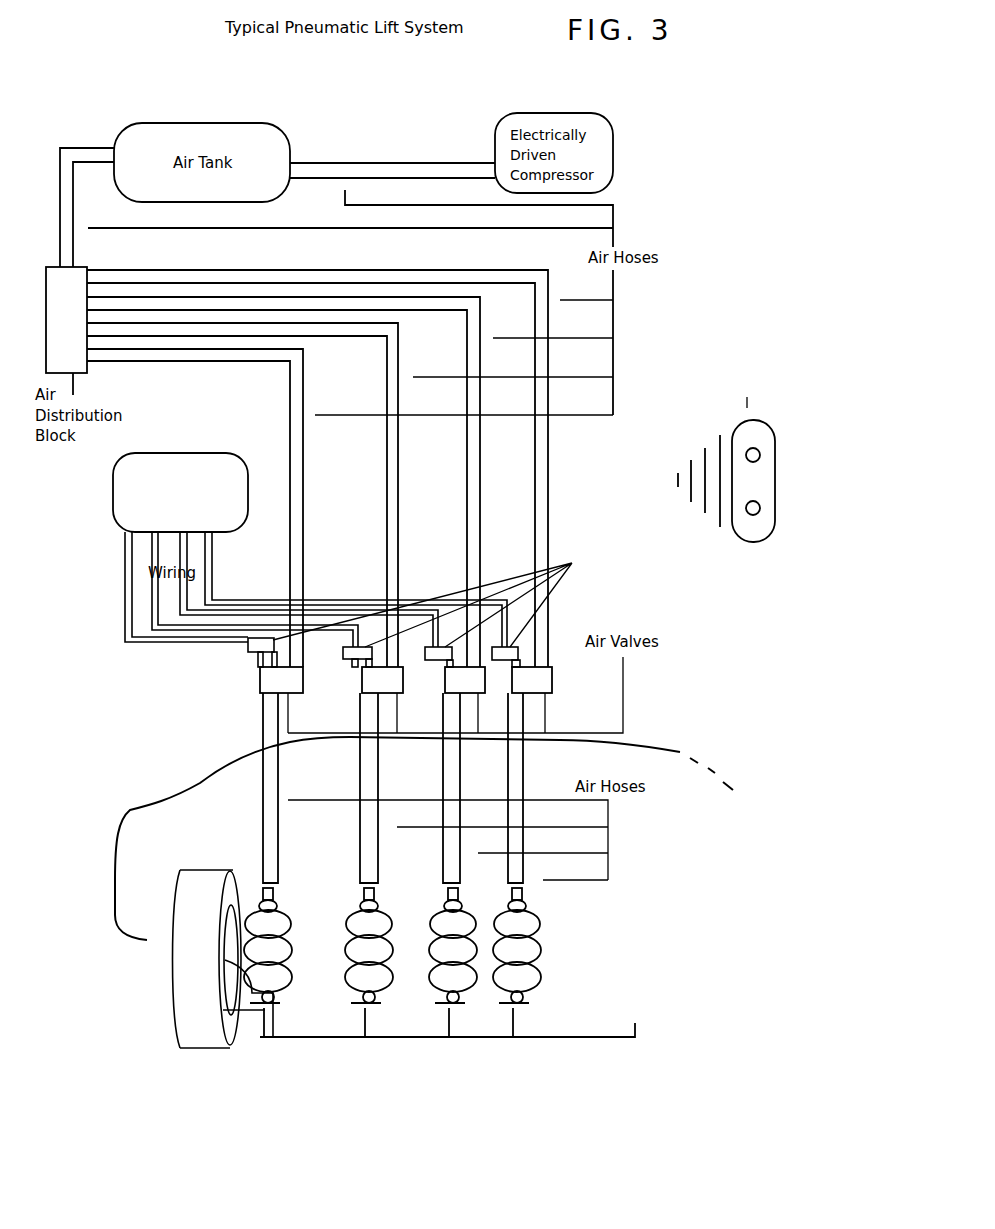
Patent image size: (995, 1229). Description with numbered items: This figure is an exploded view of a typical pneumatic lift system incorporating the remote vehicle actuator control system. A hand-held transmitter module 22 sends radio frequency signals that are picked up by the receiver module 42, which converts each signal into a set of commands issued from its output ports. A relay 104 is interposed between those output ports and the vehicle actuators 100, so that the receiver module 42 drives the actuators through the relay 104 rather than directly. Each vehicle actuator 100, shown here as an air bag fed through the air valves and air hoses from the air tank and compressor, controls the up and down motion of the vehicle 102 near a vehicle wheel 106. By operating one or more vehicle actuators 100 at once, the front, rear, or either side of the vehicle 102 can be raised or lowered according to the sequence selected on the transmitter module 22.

The receiver module 42 is at (170, 453).
The transmitter module 22 is at (776, 470).
The relay 104 is at (630, 562).
The vehicle 102 is at (150, 798).
The vehicle actuator 100 is at (543, 940).
The vehicle wheel 106 is at (258, 1027).